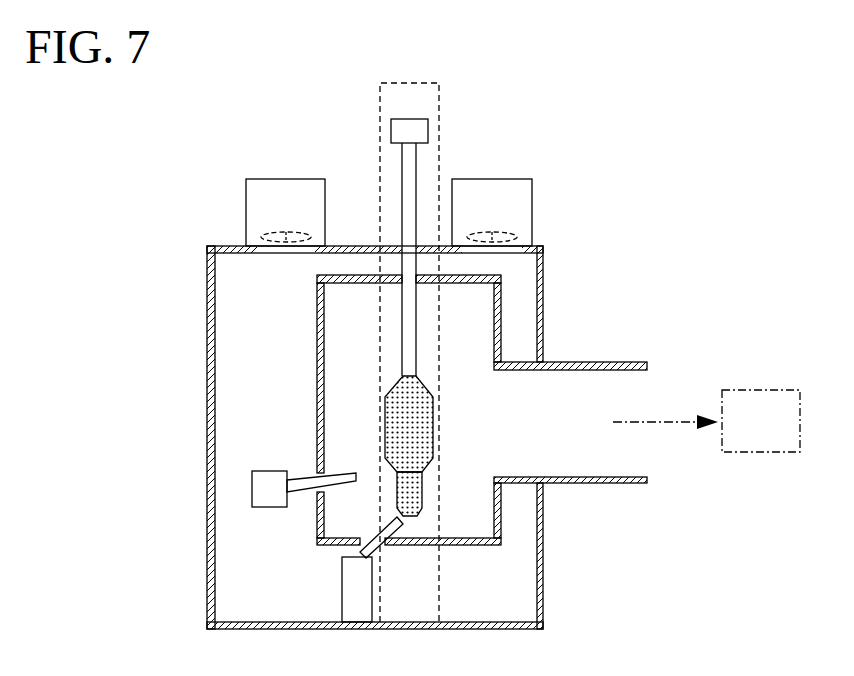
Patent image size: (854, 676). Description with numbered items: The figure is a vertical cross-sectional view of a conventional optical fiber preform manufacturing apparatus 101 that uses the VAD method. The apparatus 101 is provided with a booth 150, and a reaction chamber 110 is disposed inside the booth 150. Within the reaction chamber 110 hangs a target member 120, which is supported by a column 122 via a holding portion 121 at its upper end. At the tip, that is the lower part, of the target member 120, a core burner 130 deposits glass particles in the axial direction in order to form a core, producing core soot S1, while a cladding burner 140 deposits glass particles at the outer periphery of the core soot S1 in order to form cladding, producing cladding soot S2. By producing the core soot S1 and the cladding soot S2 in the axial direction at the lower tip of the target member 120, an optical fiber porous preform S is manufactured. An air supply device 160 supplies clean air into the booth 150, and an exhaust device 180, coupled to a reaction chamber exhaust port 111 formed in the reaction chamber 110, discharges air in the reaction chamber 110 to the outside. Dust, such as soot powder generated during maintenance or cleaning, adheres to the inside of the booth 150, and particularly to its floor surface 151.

The optical fiber preform manufacturing apparatus 101 is at (656, 116).
The reaction chamber 110 is at (500, 310).
The reaction chamber exhaust port 111 is at (617, 373).
The target member 120 is at (408, 339).
The holding portion 121 is at (428, 132).
The column 122 is at (437, 100).
The core burner 130 is at (387, 513).
The cladding burner 140 is at (350, 473).
The booth 150 is at (208, 368).
The floor surface 151 is at (484, 622).
The air supply device 160 is at (470, 202).
The exhaust device 180 is at (757, 388).
The optical fiber porous preform S is at (464, 446).
The core soot S1 is at (422, 488).
The cladding soot S2 is at (430, 425).